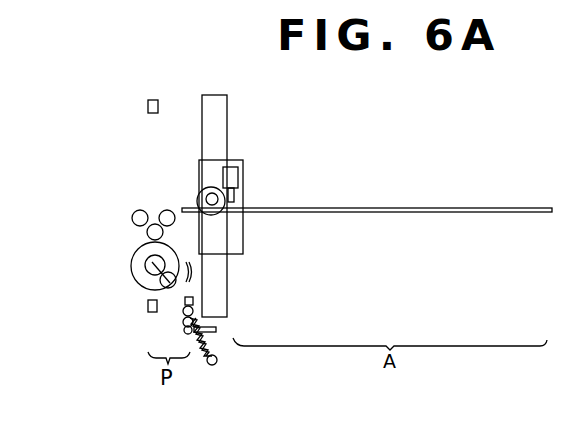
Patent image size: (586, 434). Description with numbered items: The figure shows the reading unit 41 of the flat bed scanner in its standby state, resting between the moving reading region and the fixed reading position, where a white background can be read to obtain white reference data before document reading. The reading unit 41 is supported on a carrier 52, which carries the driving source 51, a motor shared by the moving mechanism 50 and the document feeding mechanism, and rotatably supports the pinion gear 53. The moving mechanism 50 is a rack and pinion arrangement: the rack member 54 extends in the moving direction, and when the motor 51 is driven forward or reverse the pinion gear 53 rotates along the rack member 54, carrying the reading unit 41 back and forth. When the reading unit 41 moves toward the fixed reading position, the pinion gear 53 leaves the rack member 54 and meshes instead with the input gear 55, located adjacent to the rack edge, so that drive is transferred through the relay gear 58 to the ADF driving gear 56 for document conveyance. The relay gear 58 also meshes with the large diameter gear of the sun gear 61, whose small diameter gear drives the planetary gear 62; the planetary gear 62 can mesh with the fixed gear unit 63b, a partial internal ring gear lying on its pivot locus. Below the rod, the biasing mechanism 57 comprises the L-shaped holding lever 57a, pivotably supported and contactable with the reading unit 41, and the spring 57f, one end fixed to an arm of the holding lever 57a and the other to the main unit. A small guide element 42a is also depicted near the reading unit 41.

The reading unit 41 is at (227, 105).
The guide member 42a is at (152, 100).
The moving mechanism 50 is at (435, 180).
The driving source 51 is at (238, 175).
The carrier 52 is at (243, 235).
The pinion gear 53 is at (202, 190).
The rack member 54 is at (372, 206).
The input gear 55 is at (167, 210).
The ADF driving gear 56 is at (140, 210).
The biasing mechanism 57 is at (233, 353).
The holding lever 57a is at (216, 330).
The elastic member 57f is at (212, 366).
The relay gear 58 is at (147, 232).
The sun gear 61 is at (131, 265).
The planetary gear 62 is at (162, 283).
The fixed gear unit 63b is at (193, 268).